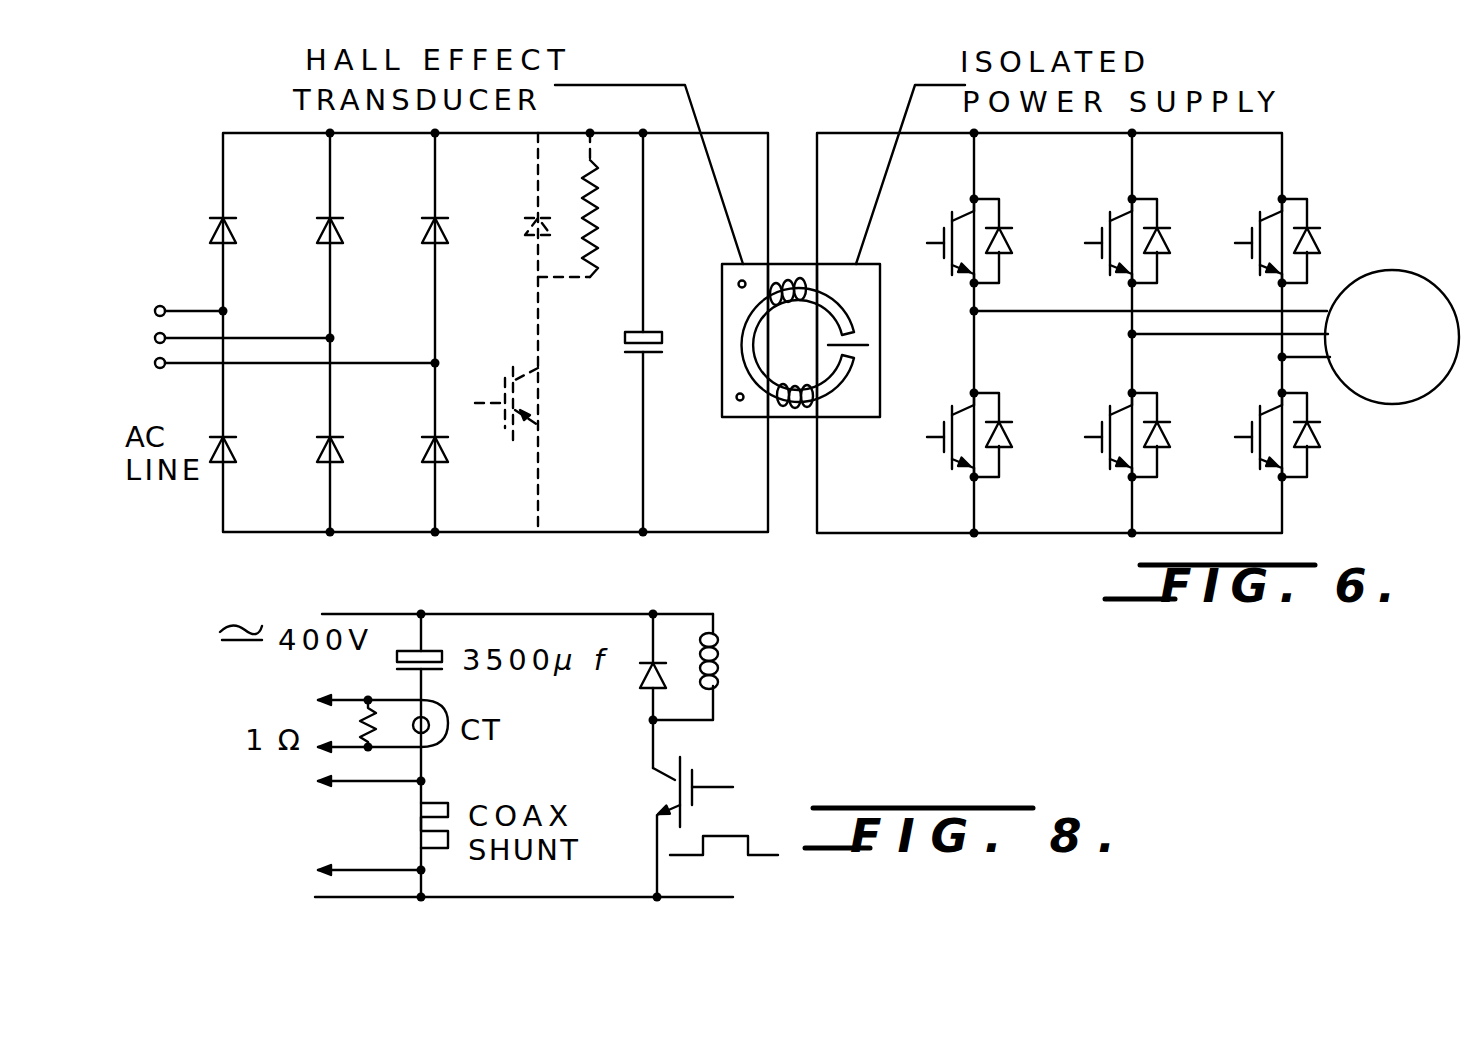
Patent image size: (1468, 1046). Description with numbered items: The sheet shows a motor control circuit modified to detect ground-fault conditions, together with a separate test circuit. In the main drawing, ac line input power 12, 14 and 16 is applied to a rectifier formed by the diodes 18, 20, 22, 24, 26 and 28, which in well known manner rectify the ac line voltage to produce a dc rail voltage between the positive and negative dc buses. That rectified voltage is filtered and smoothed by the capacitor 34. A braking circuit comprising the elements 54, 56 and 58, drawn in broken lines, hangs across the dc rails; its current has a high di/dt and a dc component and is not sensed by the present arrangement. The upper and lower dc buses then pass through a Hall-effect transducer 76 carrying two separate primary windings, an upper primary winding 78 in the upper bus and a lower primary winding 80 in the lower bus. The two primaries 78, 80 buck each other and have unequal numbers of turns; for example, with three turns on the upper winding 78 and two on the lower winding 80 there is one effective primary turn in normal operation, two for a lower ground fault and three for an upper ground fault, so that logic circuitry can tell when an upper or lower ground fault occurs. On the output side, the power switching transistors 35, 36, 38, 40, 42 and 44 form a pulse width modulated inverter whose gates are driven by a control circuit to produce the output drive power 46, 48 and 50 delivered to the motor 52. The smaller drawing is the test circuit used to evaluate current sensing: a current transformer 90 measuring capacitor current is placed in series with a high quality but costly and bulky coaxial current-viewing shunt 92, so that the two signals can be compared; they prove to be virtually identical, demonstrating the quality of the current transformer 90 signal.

In FIG. 6, the ac line input power 12 is at (163, 370).
In FIG. 6, the ac line input power 14 is at (196, 292).
In FIG. 6, the ac line input power 16 is at (157, 306).
In FIG. 6, the diode 18 is at (345, 235).
In FIG. 6, the diode 20 is at (322, 441).
In FIG. 6, the diode 22 is at (450, 232).
In FIG. 6, the diode 24 is at (428, 442).
In FIG. 6, the diode 26 is at (238, 232).
In FIG. 6, the diode 28 is at (238, 445).
In FIG. 6, the capacitor 34 is at (624, 338).
In FIG. 6, the power switching transistor 35 is at (985, 232).
In FIG. 6, the power switching transistor 36 is at (985, 455).
In FIG. 6, the power switching transistor 38 is at (1142, 225).
In FIG. 6, the power switching transistor 40 is at (1142, 455).
In FIG. 6, the power switching transistor 42 is at (1290, 220).
In FIG. 6, the power switching transistor 44 is at (1285, 445).
In FIG. 6, the output drive power 46 is at (1305, 312).
In FIG. 6, the output drive power 48 is at (1328, 330).
In FIG. 6, the output drive power 50 is at (1328, 398).
In FIG. 6, the motor 52 is at (1420, 400).
In FIG. 6, the braking circuit element 54 is at (530, 400).
In FIG. 6, the braking circuit element 56 is at (600, 195).
In FIG. 6, the braking circuit element 58 is at (528, 235).
In FIG. 6, the hall effect transducer 76 is at (745, 425).
In FIG. 6, the upper primary winding 78 is at (770, 308).
In FIG. 6, the lower primary winding 80 is at (735, 368).
In FIG. 8, the current transformer 90 is at (440, 745).
In FIG. 8, the coaxial current-viewing shunt 92 is at (418, 822).